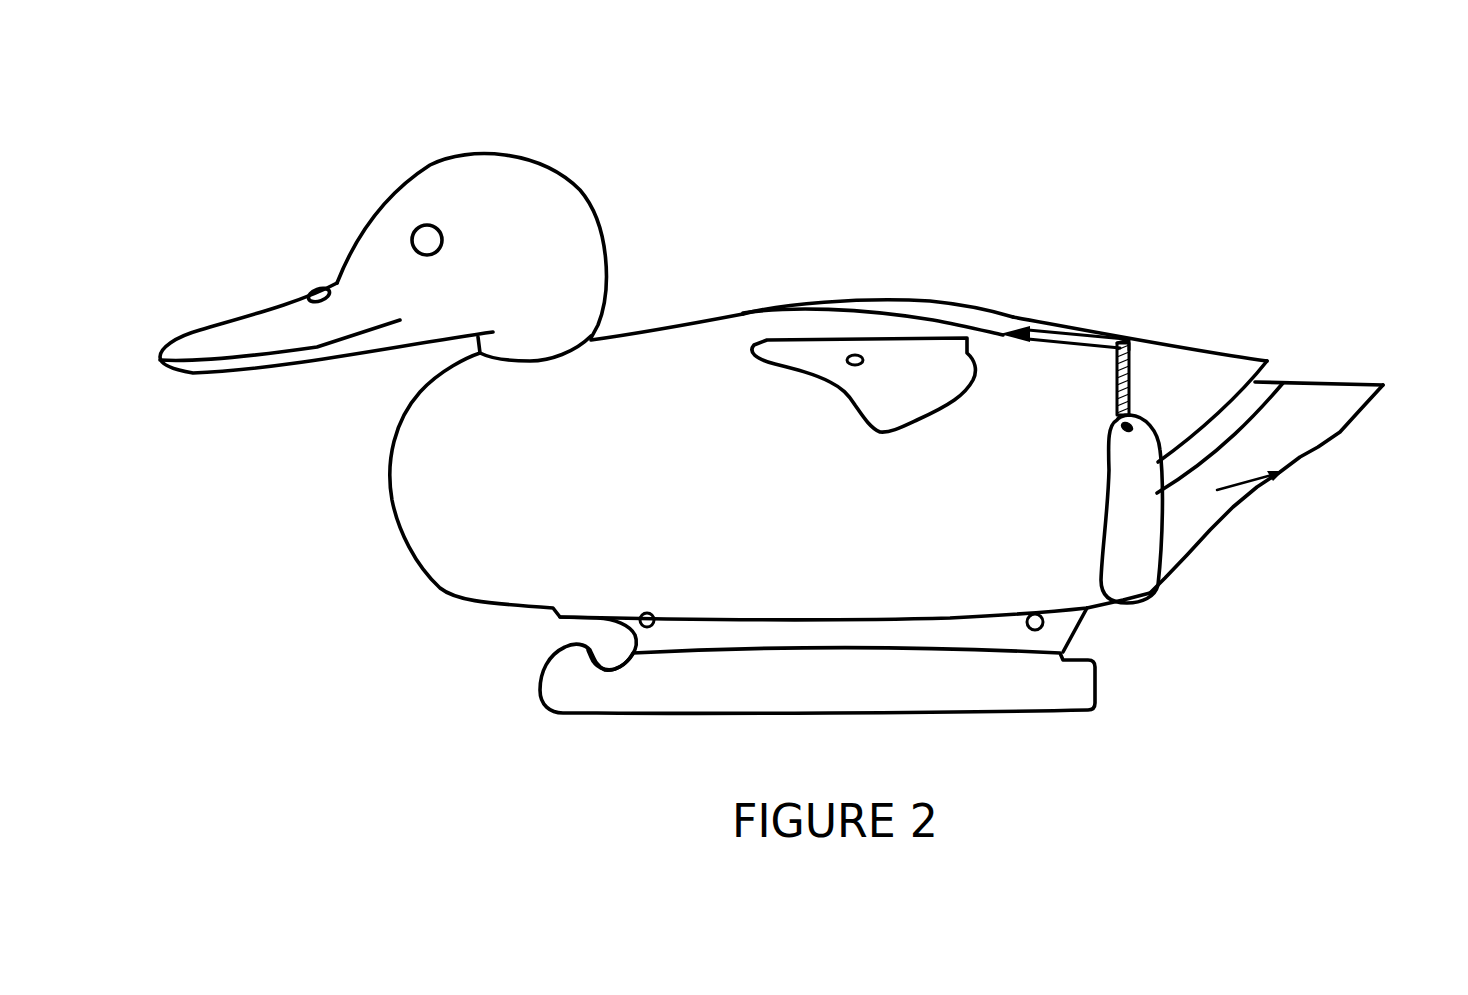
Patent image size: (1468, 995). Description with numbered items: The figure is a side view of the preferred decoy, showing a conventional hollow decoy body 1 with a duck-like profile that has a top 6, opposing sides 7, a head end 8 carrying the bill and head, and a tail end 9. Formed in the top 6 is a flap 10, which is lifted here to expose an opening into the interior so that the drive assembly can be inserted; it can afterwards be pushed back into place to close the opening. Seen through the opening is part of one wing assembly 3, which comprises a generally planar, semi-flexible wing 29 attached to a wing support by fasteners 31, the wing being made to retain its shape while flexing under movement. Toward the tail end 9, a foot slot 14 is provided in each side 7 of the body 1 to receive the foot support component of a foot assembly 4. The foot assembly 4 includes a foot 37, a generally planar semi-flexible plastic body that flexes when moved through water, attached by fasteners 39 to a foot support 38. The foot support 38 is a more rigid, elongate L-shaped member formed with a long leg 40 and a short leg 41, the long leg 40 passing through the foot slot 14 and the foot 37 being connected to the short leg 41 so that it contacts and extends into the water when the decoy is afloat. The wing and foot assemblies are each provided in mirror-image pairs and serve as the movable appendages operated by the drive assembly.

The hollow decoy body 1 is at (456, 608).
The wing assembly 3 is at (768, 333).
The foot assembly 4 is at (1203, 355).
The top 6 is at (660, 340).
The opposing sides 7 is at (673, 486).
The head end 8 is at (398, 477).
The tail end 9 is at (1310, 417).
The flap 10 is at (923, 307).
The foot slot 14 is at (1010, 328).
The wing 29 is at (903, 360).
The fasteners 31 is at (855, 355).
The foot 37 is at (1132, 557).
The foot support 38 is at (1138, 347).
The fasteners 39 is at (1133, 432).
The long leg 40 is at (1092, 337).
The short leg 41 is at (1140, 373).